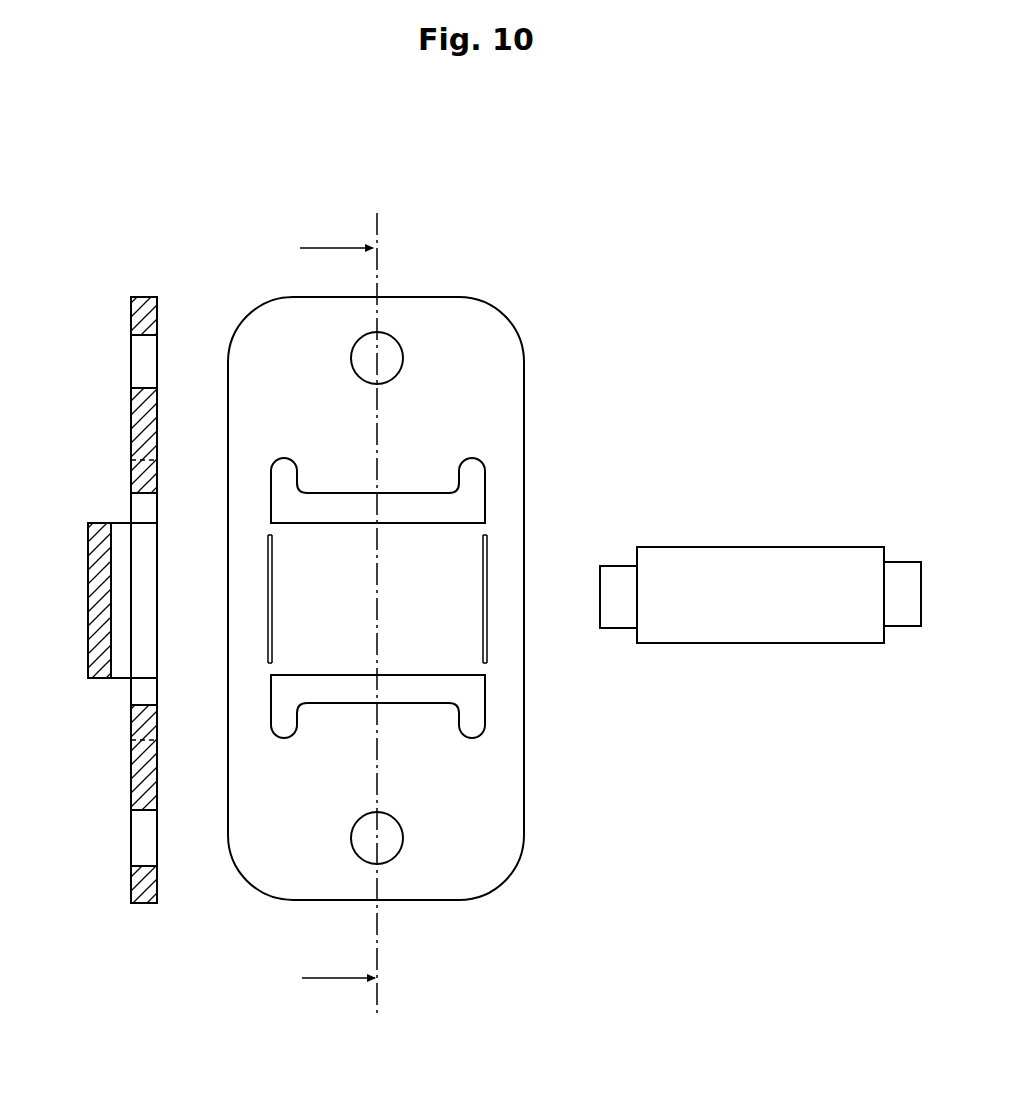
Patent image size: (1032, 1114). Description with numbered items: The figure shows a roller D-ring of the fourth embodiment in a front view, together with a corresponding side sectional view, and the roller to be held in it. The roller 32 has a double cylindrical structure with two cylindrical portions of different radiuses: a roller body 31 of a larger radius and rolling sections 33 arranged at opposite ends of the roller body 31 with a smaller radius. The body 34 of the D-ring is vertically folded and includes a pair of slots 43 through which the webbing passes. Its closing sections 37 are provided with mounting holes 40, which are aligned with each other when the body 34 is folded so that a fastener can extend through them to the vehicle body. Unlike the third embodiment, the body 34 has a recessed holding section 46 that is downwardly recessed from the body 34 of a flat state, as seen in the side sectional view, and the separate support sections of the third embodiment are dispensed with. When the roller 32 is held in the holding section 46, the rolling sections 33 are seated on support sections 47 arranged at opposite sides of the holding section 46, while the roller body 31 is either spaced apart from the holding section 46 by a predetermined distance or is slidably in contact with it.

The roller body 31 is at (788, 556).
The roller 32 is at (741, 528).
The rolling sections 33 is at (903, 573).
The body 34 is at (176, 298).
The closing sections 37 is at (390, 417).
The mounting holes 40 is at (390, 343).
The slots 43 is at (470, 470).
The holding section 46 is at (422, 547).
The support sections 47 is at (247, 596).